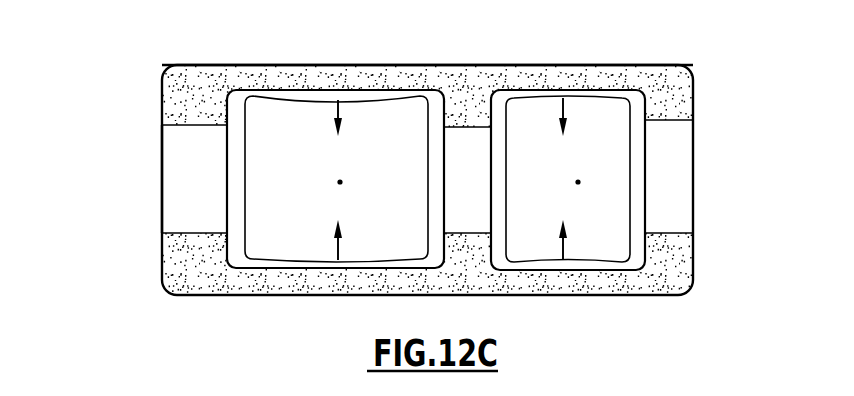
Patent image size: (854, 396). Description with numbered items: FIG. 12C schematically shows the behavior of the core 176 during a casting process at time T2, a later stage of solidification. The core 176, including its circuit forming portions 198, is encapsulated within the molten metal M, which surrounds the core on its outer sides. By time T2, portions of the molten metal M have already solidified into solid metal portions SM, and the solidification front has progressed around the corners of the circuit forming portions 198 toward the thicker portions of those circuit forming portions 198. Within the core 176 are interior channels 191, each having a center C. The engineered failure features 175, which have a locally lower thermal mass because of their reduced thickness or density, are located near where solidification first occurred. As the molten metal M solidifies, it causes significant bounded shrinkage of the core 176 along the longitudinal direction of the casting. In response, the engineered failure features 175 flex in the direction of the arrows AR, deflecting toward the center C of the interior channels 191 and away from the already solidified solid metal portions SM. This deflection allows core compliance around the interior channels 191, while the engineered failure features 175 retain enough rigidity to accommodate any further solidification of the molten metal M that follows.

The engineered failure features 175 is at (352, 100).
The core 176 is at (633, 80).
The interior channels 191 is at (303, 193).
The circuit forming portions 198 is at (222, 243).
The solid metal portions SM is at (537, 82).
The molten metal M is at (677, 100).
The center C is at (342, 182).
The arrows AR is at (333, 112).
The time T2 is at (73, 193).